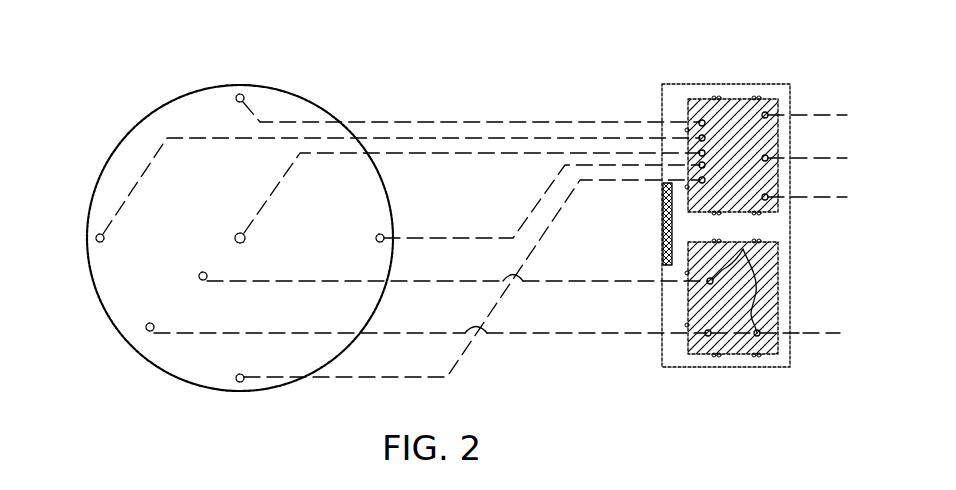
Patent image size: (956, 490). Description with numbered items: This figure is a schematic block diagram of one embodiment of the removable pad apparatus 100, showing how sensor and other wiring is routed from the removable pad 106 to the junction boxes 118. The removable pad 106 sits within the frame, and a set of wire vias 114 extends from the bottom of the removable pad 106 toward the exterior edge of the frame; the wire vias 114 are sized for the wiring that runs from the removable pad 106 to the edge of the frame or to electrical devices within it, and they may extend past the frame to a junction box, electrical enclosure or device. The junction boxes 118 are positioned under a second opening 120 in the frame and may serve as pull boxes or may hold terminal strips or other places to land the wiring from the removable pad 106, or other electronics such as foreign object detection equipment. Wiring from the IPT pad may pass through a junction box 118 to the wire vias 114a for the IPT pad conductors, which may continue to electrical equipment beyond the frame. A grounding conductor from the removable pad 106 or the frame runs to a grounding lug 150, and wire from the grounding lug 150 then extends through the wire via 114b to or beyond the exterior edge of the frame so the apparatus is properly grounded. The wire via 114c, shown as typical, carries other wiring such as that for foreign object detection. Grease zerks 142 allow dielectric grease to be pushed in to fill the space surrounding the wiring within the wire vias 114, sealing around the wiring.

The removable pad apparatus 100 is at (125, 53).
The removable pad 106 is at (319, 96).
The wire vias 114 is at (805, 111).
The wire vias for IPT pad conductors 114a is at (815, 336).
The wire via for grounding 114b is at (840, 200).
The wire via for other wiring 114c is at (464, 118).
The junction boxes 118 is at (734, 111).
The second opening 120 is at (674, 82).
The grease zerks 142 is at (658, 214).
The grounding lug 150 is at (750, 251).